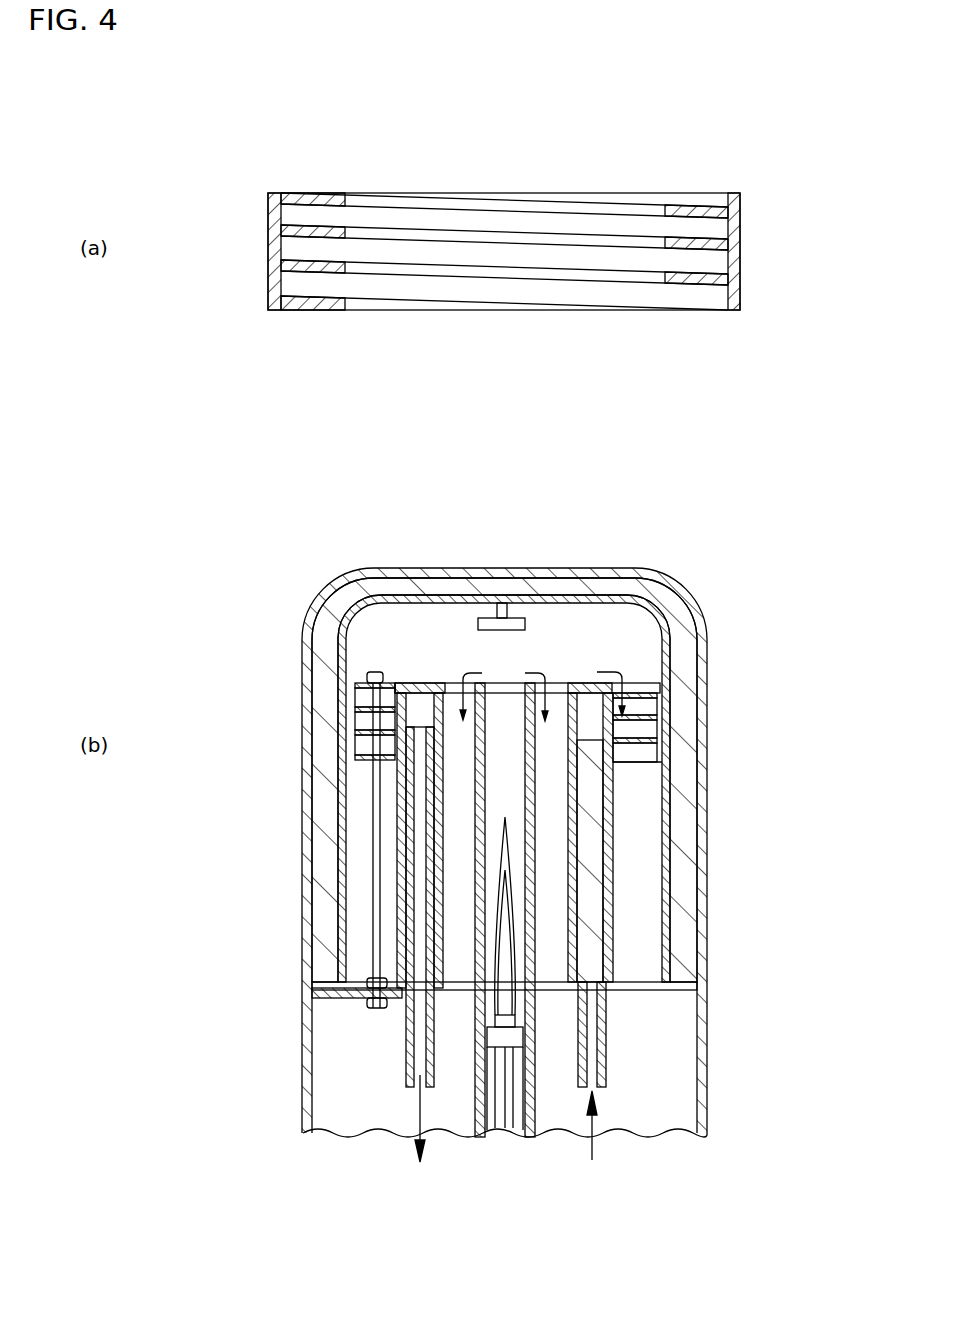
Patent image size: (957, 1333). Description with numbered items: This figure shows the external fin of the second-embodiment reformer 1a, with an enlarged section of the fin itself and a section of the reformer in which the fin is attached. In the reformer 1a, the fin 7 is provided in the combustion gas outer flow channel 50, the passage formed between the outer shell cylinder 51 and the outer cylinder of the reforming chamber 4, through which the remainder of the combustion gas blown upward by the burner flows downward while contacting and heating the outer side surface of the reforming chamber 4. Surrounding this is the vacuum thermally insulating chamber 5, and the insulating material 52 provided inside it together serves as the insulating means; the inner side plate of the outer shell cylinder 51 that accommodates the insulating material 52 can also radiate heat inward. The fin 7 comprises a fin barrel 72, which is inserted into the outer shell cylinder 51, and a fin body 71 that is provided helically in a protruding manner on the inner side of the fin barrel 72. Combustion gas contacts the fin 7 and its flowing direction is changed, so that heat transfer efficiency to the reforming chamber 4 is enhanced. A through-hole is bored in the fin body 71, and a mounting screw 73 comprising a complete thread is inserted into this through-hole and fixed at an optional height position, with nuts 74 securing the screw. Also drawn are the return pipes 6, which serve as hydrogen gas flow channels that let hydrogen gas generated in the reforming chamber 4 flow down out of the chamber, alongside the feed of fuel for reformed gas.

The fin 7 is at (459, 218).
The fin body 71 is at (330, 226).
The fin barrel 72 is at (268, 220).
The reformer 1a is at (446, 843).
The vacuum thermally insulating chamber 5 is at (712, 622).
The combustion gas outer flow channel 50 is at (650, 828).
The outer shell cylinder 51 is at (352, 923).
The insulating material 52 is at (536, 575).
The reforming chamber 4 is at (608, 898).
The return pipes 6 is at (405, 1060).
The mounting screw 73 is at (372, 895).
The nut 74 is at (365, 683).